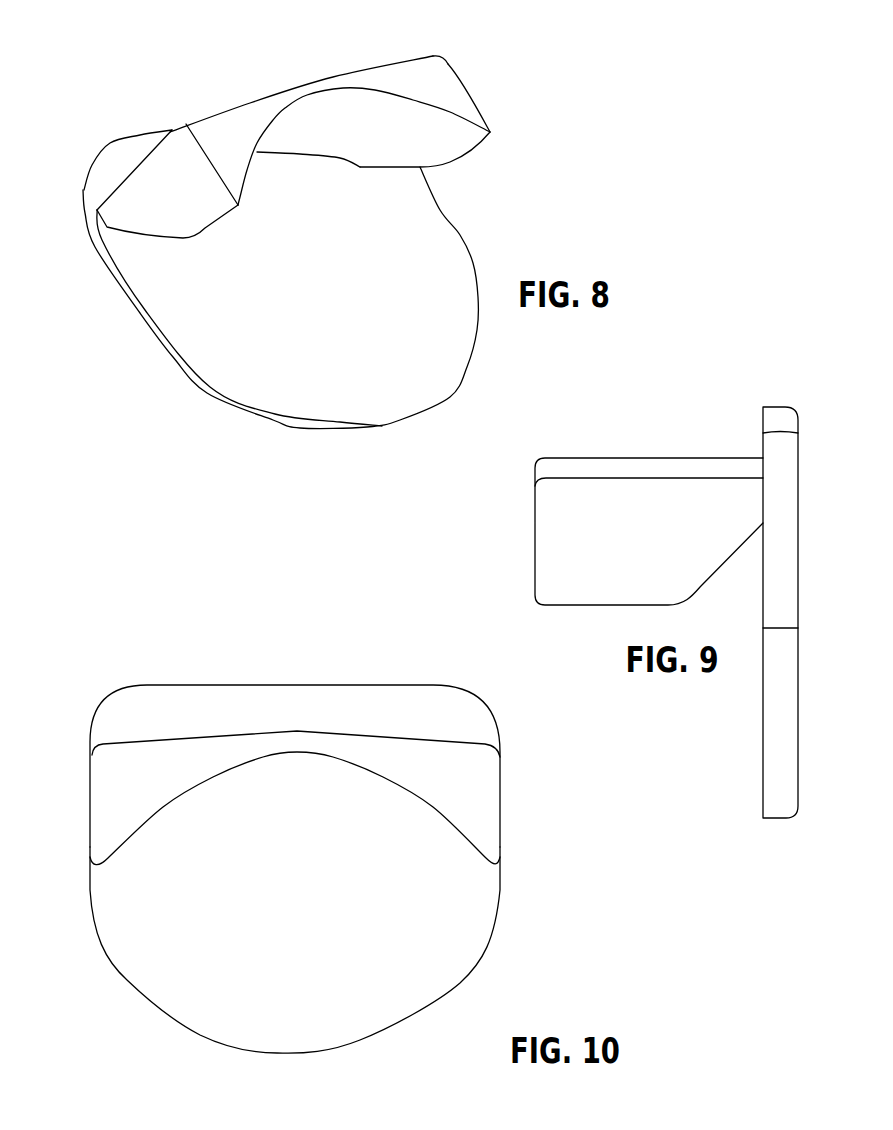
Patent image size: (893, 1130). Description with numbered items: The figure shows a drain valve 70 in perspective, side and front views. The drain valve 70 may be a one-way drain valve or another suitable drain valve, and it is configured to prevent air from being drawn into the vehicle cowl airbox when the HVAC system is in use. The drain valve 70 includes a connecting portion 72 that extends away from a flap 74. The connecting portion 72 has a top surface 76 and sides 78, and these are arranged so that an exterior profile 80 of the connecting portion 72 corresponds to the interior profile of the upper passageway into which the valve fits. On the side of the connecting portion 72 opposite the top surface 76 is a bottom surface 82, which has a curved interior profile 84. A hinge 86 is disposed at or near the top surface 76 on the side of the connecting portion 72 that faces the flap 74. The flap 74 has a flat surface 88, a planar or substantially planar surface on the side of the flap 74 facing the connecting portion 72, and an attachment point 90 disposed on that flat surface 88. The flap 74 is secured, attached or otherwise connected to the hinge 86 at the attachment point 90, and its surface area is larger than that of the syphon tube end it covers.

In FIG. 8, the drain valve 70 is at (92, 87).
In FIG. 8, the connecting portion 72 is at (248, 100).
In FIG. 9, the connecting portion 72 is at (533, 525).
In FIG. 10, the connecting portion 72 is at (138, 717).
In FIG. 8, the flap 74 is at (208, 397).
In FIG. 9, the flap 74 is at (805, 600).
In FIG. 10, the flap 74 is at (240, 1050).
In FIG. 8, the top surface 76 is at (425, 53).
In FIG. 8, the sides 78 is at (175, 157).
In FIG. 10, the sides 78 is at (88, 815).
In FIG. 8, the exterior profile 80 is at (212, 107).
In FIG. 10, the exterior profile 80 is at (280, 700).
In FIG. 8, the bottom surface 82 is at (332, 145).
In FIG. 10, the bottom surface 82 is at (385, 780).
In FIG. 8, the curved interior profile 84 is at (297, 160).
In FIG. 10, the curved interior profile 84 is at (287, 783).
In FIG. 9, the hinge 86 is at (725, 451).
In FIG. 8, the flat surface 88 is at (338, 397).
In FIG. 10, the flat surface 88 is at (358, 1018).
In FIG. 8, the attachment point 90 is at (100, 215).
In FIG. 9, the attachment point 90 is at (758, 533).